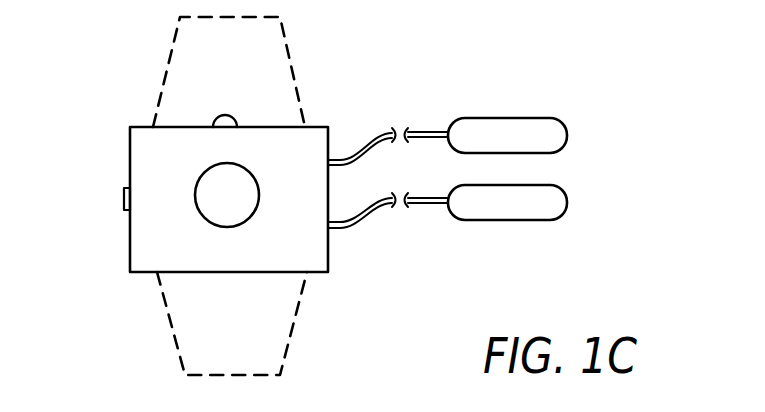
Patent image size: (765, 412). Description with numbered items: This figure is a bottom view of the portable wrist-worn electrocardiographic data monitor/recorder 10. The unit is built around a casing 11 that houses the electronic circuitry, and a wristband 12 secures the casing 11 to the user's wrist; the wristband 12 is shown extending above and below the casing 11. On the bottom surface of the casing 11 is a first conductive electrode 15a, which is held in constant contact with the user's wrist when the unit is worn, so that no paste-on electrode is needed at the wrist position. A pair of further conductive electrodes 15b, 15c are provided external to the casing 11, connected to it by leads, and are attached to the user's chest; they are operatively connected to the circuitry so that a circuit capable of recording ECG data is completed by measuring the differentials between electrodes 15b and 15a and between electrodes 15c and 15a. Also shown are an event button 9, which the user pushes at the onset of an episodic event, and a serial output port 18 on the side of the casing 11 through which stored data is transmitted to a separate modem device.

The ECG data monitor/recorder 10 is at (115, 108).
The event button 9 is at (226, 117).
The casing 11 is at (328, 248).
The wristband 12 is at (292, 308).
The serial output port 18 is at (124, 200).
The first conductive electrode 15a is at (259, 190).
The conductive electrode 15b is at (510, 220).
The conductive electrode 15c is at (507, 118).